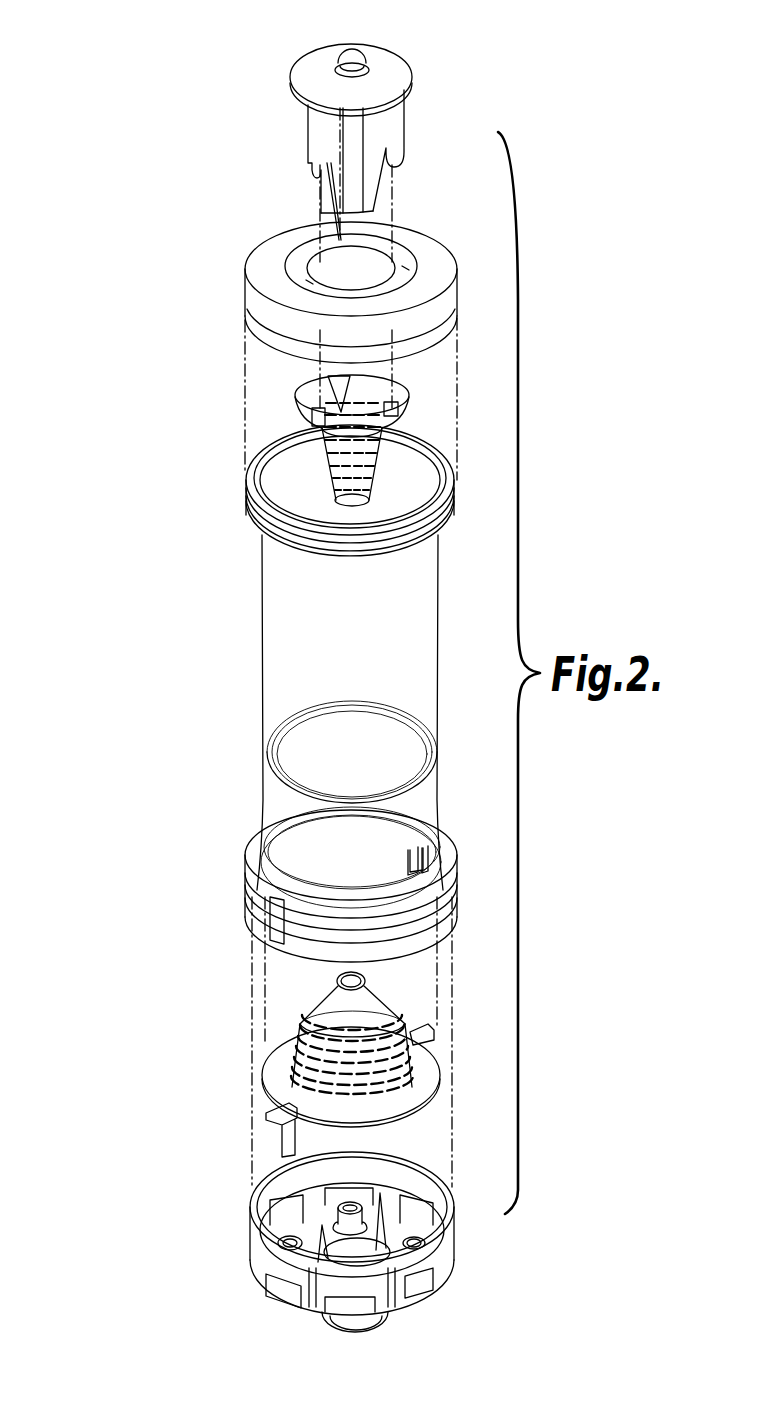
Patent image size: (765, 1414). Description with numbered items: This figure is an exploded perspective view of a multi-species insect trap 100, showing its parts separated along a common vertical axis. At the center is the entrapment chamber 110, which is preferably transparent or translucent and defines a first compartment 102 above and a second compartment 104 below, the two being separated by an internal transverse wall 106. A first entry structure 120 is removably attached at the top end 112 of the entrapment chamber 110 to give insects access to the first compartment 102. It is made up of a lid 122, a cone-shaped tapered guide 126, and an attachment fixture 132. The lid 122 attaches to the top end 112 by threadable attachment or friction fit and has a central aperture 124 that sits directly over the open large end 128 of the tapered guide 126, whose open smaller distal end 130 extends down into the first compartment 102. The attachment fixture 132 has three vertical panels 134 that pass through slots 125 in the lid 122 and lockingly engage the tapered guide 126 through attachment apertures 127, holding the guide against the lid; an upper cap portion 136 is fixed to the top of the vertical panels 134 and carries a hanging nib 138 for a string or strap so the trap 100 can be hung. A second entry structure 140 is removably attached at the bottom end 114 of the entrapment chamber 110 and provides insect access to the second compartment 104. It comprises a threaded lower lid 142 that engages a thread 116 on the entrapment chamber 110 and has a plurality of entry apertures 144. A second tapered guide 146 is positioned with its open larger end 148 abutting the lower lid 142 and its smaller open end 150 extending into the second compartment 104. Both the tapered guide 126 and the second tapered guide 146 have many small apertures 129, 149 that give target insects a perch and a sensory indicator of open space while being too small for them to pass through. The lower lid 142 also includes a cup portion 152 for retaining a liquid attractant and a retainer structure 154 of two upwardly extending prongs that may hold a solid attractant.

The multi-species insect trap 100 is at (122, 80).
The first compartment 102 is at (266, 568).
The second compartment 104 is at (278, 808).
The internal transverse wall 106 is at (288, 752).
The entrapment chamber 110 is at (258, 607).
The top end 112 is at (260, 494).
The bottom end 114 is at (276, 912).
The thread 116 is at (292, 938).
The first entry structure 120 is at (255, 206).
The lid 122 is at (262, 318).
The central aperture 124 is at (325, 272).
The slots 125 is at (336, 228).
The tapered guide 126 is at (317, 455).
The attachment apertures 127 is at (314, 410).
The open large end 128 is at (300, 405).
The apertures 129 is at (336, 476).
The open smaller distal end 130 is at (338, 505).
The attachment fixture 132 is at (413, 117).
The vertical panels 134 is at (394, 140).
The upper cap portion 136 is at (395, 61).
The hanging nib 138 is at (345, 52).
The second entry structure 140 is at (244, 1184).
The threaded lower lid 142 is at (266, 1264).
The entry apertures 144 is at (290, 1243).
The second tapered guide 146 is at (298, 1023).
The open larger end 148 is at (270, 1095).
The apertures 149 is at (296, 1048).
The smaller open end 150 is at (336, 975).
The cup portion 152 is at (372, 1318).
The retainer structure 154 is at (350, 1216).